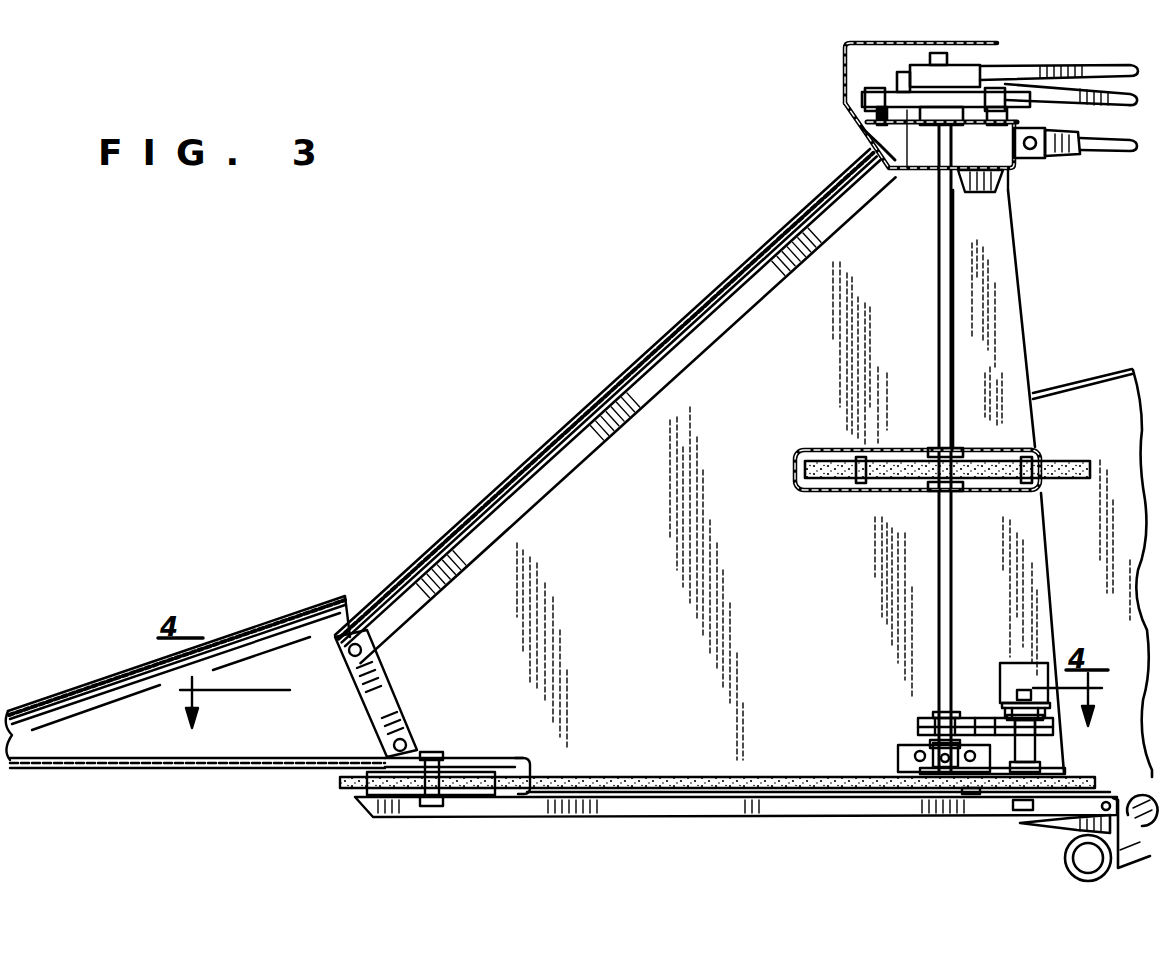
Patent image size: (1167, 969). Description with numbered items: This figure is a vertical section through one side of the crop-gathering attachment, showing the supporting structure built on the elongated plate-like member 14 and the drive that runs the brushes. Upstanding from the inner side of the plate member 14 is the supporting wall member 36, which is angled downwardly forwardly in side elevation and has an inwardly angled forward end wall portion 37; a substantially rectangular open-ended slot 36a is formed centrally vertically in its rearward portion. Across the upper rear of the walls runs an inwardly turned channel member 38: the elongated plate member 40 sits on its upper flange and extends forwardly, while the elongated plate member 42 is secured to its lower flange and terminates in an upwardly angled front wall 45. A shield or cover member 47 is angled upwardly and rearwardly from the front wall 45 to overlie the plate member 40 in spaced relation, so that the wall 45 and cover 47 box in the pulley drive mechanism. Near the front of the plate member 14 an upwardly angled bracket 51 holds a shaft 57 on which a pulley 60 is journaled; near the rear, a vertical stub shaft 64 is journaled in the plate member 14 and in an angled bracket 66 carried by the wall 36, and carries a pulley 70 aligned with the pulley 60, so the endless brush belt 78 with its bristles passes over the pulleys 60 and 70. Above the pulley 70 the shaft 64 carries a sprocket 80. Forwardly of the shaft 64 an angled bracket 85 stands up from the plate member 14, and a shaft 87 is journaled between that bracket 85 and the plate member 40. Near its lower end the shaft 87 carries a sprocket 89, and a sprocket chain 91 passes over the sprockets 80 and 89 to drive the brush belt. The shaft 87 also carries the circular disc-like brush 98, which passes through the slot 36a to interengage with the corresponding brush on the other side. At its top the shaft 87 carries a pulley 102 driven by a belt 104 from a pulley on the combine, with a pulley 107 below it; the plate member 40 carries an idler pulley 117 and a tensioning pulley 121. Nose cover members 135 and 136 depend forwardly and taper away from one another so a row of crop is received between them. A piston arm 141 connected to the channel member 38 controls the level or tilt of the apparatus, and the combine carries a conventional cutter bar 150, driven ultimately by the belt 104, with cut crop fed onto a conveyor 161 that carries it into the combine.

The plate-like member 14 is at (645, 805).
The supporting wall member 36 is at (636, 550).
The open-ended slot 36a is at (830, 490).
The forward end wall portion 37 is at (372, 724).
The channel member 38 is at (1022, 172).
The plate member 40 is at (908, 110).
The plate member 42 is at (928, 170).
The front wall 45 is at (866, 150).
The shield or cover member 47 is at (845, 55).
The bracket 51 is at (532, 766).
The shaft 57 is at (462, 760).
The pulley 60 is at (475, 795).
The stub shaft 64 is at (1053, 745).
The angled bracket 66 is at (1024, 663).
The pulley 70 is at (985, 793).
The endless brush belt 78 is at (770, 790).
The sprocket 80 is at (1015, 730).
The angled bracket 85 is at (898, 758).
The shaft 87 is at (952, 320).
The sprocket 89 is at (933, 714).
The sprocket chain 91 is at (918, 728).
The circular disc-like brush 98 is at (1058, 462).
The pulley 102 is at (985, 64).
The belt 104 is at (1082, 64).
The pulley 107 is at (905, 90).
The idler pulley 117 is at (862, 96).
The pulley 121 is at (1060, 104).
The nose cover member 135 is at (60, 695).
The nose cover member 136 is at (525, 462).
The piston arm 141 is at (1090, 150).
The cutter bar 150 is at (1050, 832).
The conveyor 161 is at (1145, 790).